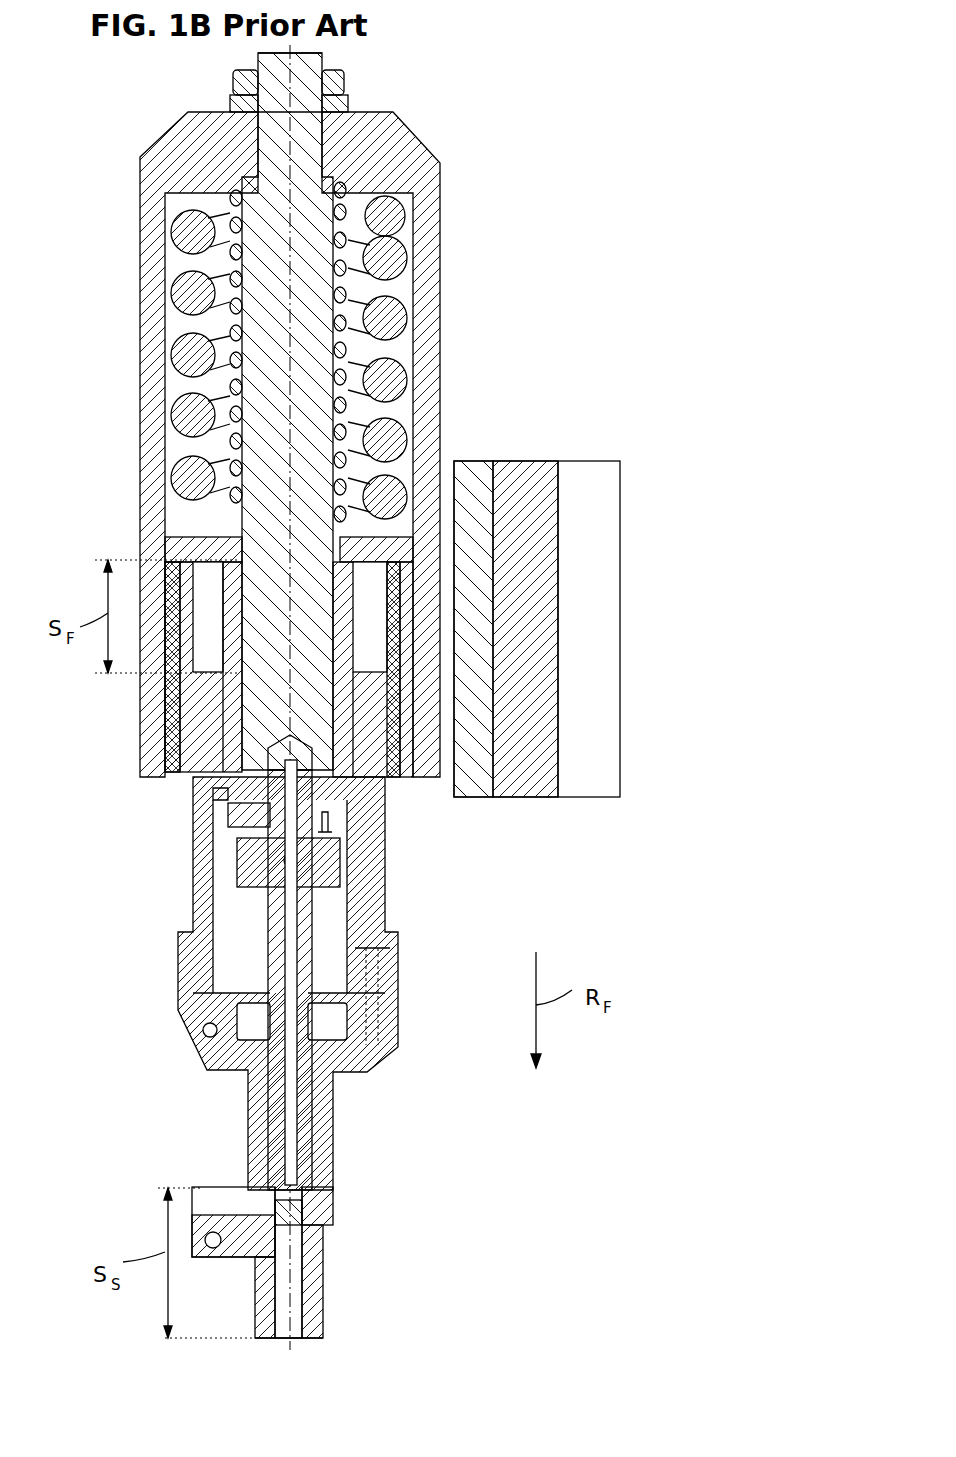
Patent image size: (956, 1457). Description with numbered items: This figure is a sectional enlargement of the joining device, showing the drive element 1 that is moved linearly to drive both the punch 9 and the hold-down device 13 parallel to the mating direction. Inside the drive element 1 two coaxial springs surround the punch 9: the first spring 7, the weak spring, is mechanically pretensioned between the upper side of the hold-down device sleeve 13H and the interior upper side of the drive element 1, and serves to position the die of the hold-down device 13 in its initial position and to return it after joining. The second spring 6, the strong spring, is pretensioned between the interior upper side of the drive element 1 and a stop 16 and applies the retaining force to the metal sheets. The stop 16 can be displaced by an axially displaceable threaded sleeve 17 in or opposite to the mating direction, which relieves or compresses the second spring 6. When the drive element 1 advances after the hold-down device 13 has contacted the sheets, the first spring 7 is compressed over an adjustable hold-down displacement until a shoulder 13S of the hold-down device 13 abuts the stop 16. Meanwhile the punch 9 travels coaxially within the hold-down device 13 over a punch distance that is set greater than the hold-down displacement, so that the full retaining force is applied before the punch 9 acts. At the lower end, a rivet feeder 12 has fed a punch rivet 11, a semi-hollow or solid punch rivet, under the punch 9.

The drive element 1 is at (180, 150).
The second spring 6 is at (188, 350).
The first spring 7 is at (228, 285).
The stop 16 is at (178, 546).
The threaded sleeve 17 is at (400, 688).
The shoulder 13S is at (370, 677).
The hold-down device sleeve 13H is at (382, 880).
The punch 9 is at (270, 912).
The rivet feeder 12 is at (217, 1203).
The punch rivet 11 is at (292, 1210).
The hold-down device 13 is at (317, 1287).